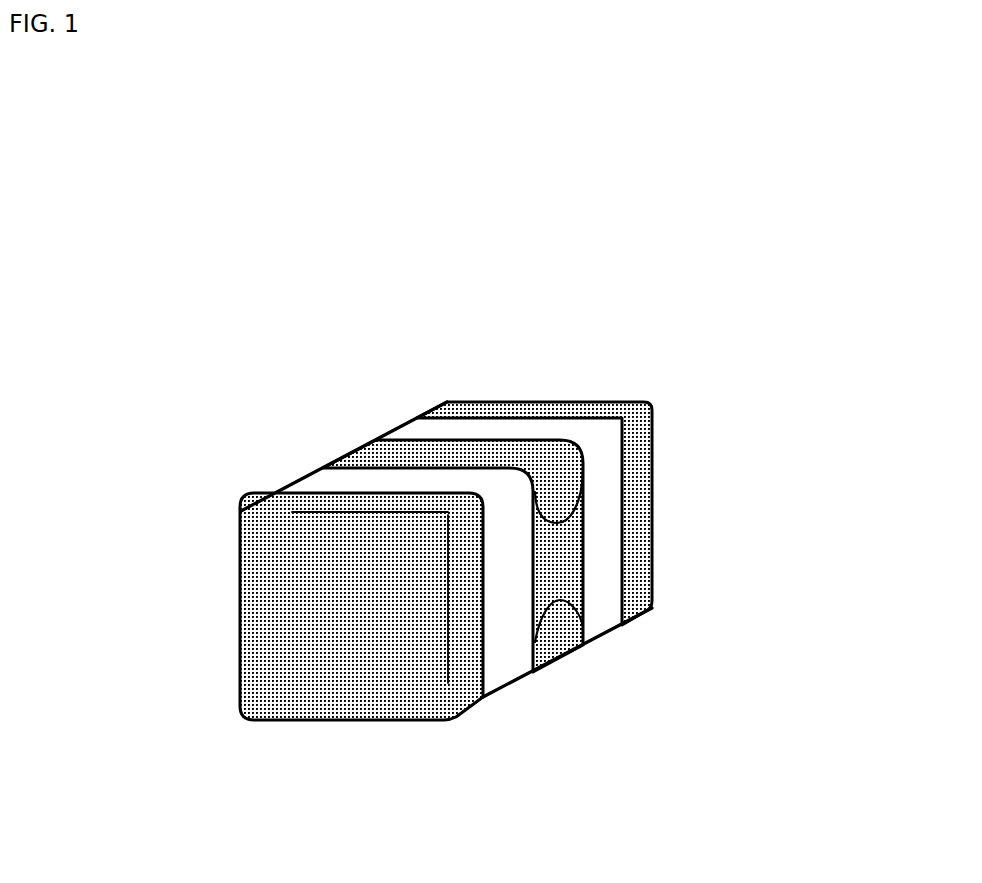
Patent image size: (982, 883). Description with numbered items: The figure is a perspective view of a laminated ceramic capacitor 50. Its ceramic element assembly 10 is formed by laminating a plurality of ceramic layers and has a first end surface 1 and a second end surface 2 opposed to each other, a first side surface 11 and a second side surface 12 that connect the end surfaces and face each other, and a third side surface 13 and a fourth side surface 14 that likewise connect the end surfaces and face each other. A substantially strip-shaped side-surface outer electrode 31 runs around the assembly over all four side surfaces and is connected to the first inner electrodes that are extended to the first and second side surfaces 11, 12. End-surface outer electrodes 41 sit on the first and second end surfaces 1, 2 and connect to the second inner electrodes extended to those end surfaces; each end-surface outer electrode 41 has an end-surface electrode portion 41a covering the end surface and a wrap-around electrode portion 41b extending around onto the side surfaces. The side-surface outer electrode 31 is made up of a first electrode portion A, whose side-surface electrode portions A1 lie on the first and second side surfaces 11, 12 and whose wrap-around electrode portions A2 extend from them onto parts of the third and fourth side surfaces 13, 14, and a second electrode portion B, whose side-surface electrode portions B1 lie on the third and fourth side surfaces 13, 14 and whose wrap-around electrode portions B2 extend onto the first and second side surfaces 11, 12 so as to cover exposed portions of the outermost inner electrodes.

The first end surface 1 is at (327, 633).
The second end surface 2 is at (655, 462).
The ceramic element assembly 10 is at (392, 405).
The first side surface 11 is at (313, 507).
The second side surface 12 is at (600, 568).
The third side surface 13 is at (485, 432).
The fourth side surface 14 is at (332, 720).
The side-surface outer electrode 31 is at (527, 432).
The end-surface outer electrode 41 is at (615, 400).
The end-surface electrode portion 41a is at (280, 560).
The wrap-around electrode portion 41b is at (307, 488).
The laminated ceramic capacitor 50 is at (667, 380).
The first electrode portion A is at (537, 627).
The side-surface electrode portion A1 is at (532, 605).
The wrap-around electrode portion A2 is at (368, 440).
The second electrode portion B is at (433, 438).
The side-surface electrode portion B1 is at (427, 470).
The wrap-around electrode portion B2 is at (565, 468).